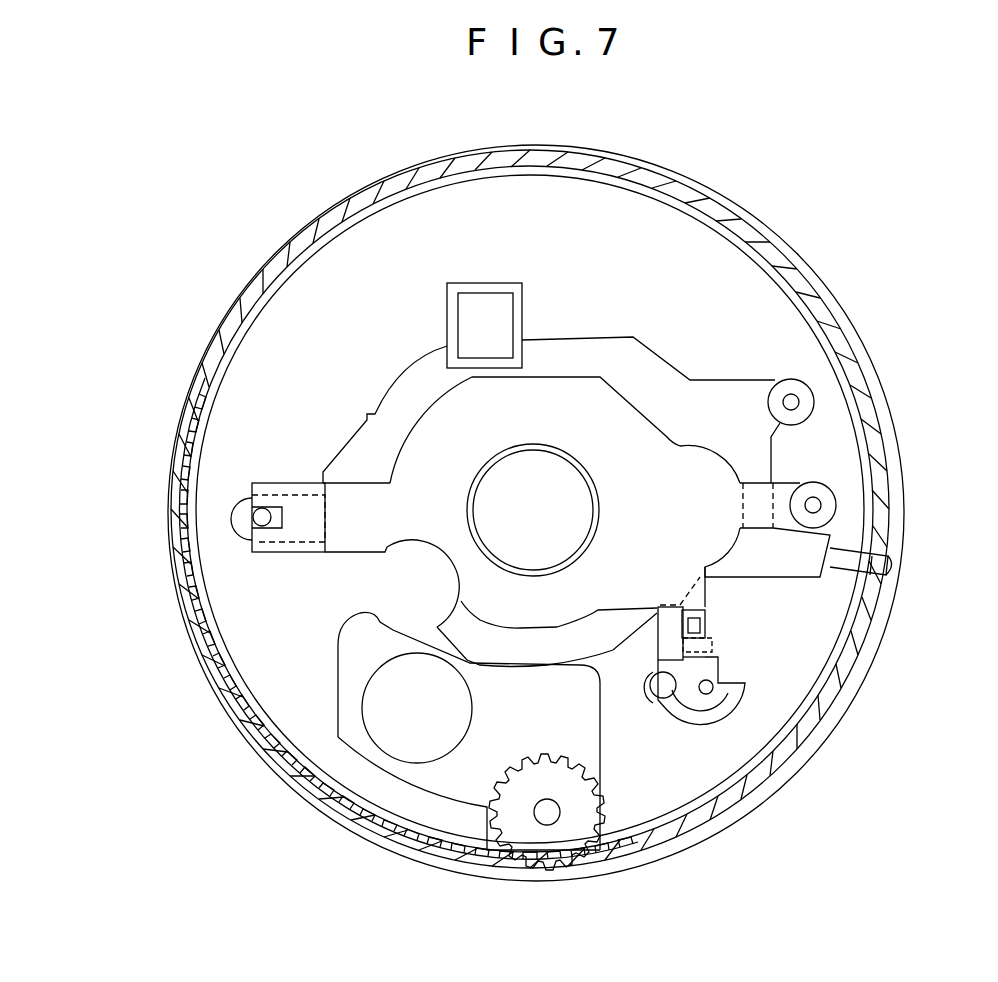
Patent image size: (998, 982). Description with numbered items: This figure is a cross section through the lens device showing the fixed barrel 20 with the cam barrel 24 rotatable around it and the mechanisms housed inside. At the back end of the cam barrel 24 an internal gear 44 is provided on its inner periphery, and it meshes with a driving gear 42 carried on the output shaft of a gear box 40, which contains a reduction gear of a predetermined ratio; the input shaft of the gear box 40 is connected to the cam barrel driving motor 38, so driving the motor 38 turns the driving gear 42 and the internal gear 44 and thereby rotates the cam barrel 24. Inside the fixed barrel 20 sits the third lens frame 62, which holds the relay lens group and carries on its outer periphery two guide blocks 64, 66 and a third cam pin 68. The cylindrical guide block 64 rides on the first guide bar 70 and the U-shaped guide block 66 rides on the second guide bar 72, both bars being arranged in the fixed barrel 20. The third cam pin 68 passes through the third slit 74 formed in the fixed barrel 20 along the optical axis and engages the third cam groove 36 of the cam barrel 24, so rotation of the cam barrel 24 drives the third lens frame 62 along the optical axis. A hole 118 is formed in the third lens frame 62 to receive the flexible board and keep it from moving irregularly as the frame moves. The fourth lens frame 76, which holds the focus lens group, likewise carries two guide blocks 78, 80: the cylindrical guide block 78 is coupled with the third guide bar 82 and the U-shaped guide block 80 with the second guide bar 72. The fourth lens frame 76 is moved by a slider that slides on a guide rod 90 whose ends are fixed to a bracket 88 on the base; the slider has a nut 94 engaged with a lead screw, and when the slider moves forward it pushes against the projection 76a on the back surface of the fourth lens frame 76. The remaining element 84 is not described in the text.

The fixed barrel 20 is at (693, 160).
The cam barrel 24 is at (332, 226).
The third cam groove 36 is at (885, 572).
The cam barrel driving motor 38 is at (382, 733).
The gear box 40 is at (472, 780).
The driving gear 42 is at (558, 848).
The internal gear 44 is at (386, 835).
The third lens frame 62 is at (668, 367).
The guide block 64 is at (830, 402).
The guide block 66 is at (290, 502).
The third cam pin 68 is at (845, 582).
The first guide bar 70 is at (800, 398).
The second guide bar 72 is at (256, 517).
The third slit 74 is at (893, 557).
The fourth lens frame 76 is at (570, 385).
The projection 76a is at (714, 647).
The guide block 78 is at (833, 493).
The guide block 80 is at (292, 553).
The third guide bar 82 is at (830, 508).
The sector 84 is at (752, 695).
The bracket 88 is at (658, 700).
The guide rod 90 is at (712, 694).
The nut 94 is at (648, 660).
The hole 118 is at (462, 318).